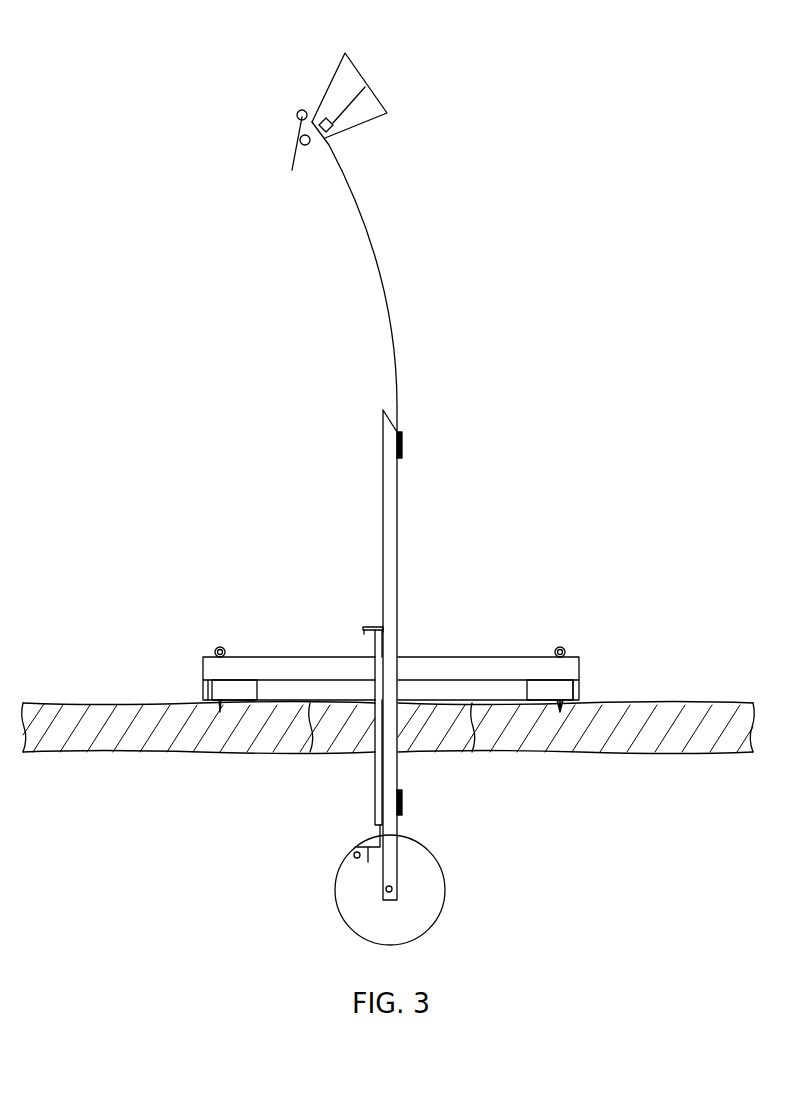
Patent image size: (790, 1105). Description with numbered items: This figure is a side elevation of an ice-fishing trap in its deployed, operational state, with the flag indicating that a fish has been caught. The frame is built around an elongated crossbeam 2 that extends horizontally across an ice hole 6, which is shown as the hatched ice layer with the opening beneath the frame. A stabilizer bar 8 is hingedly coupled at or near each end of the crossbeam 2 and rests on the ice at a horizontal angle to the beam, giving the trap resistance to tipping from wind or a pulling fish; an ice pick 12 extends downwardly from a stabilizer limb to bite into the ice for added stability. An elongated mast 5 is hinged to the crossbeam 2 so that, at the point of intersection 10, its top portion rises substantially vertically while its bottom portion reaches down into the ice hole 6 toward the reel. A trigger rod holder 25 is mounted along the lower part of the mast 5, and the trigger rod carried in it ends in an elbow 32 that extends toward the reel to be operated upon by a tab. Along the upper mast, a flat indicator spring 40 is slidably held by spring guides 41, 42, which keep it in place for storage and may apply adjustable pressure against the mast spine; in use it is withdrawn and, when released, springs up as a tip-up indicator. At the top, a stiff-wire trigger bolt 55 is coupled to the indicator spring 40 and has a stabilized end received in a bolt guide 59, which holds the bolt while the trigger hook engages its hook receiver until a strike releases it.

The crossbeam 2 is at (258, 657).
The mast 5 is at (383, 475).
The ice hole 6 is at (440, 740).
The stabilizer bar 8 is at (202, 688).
The point of intersection 10 is at (375, 655).
The ice pick 12 is at (562, 708).
The trigger rod holder 25 is at (375, 782).
The elbow 32 is at (357, 848).
The indicator spring 40 is at (378, 97).
The spring guide 41 is at (402, 445).
The spring guide 42 is at (402, 812).
The trigger bolt 55 is at (297, 153).
The bolt guide 59 is at (386, 630).